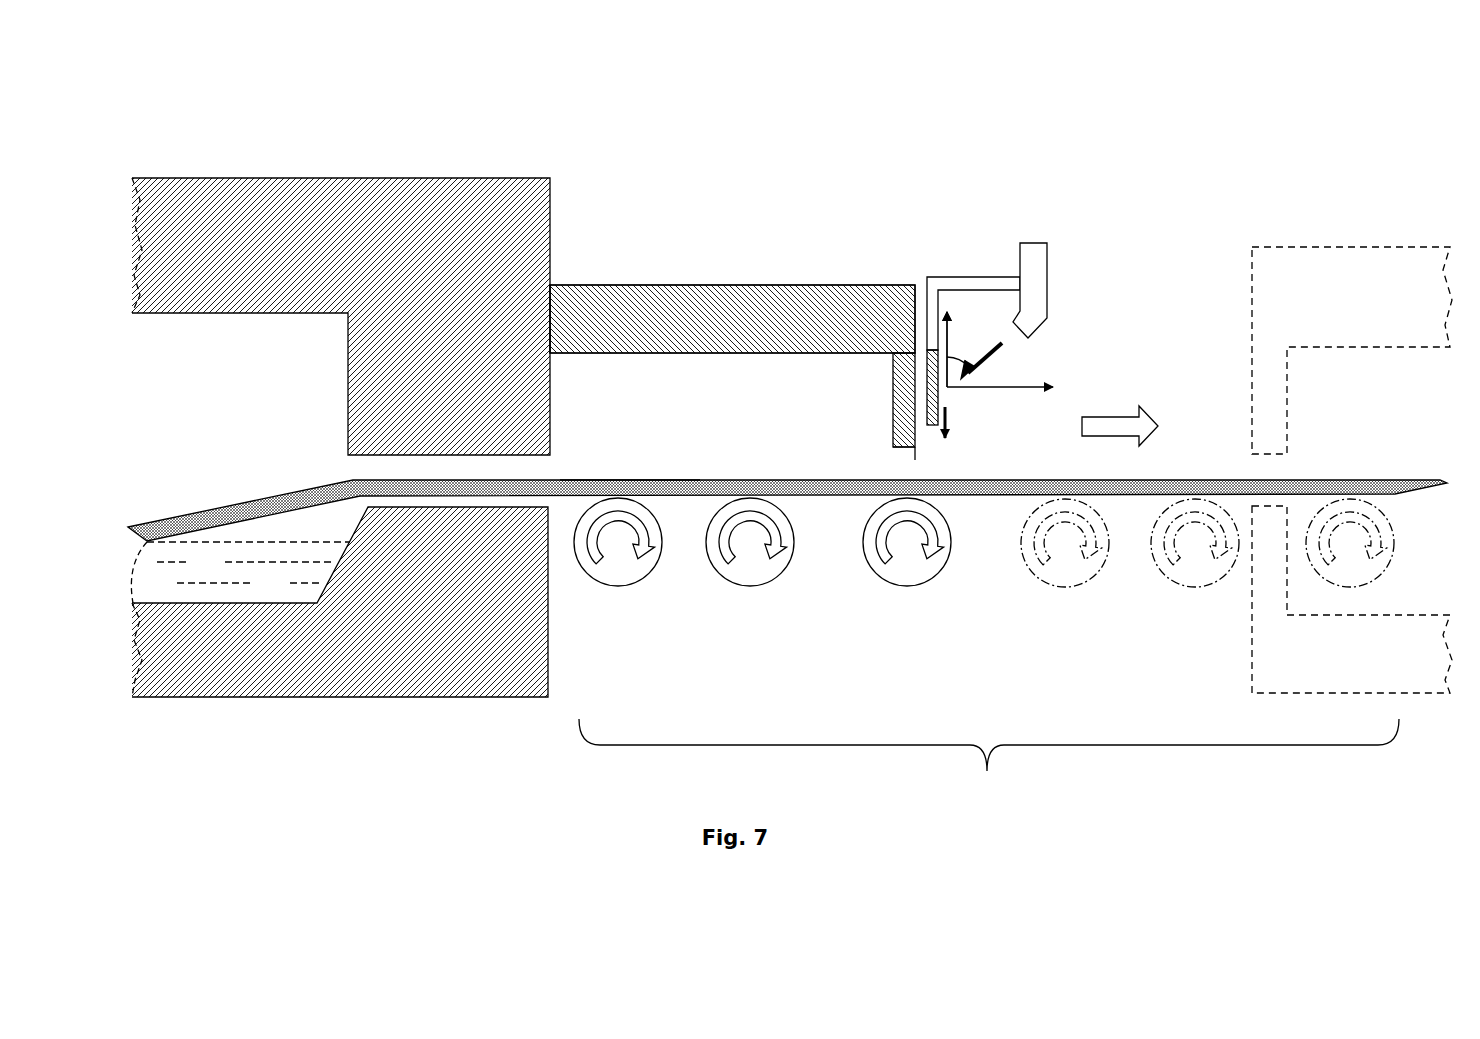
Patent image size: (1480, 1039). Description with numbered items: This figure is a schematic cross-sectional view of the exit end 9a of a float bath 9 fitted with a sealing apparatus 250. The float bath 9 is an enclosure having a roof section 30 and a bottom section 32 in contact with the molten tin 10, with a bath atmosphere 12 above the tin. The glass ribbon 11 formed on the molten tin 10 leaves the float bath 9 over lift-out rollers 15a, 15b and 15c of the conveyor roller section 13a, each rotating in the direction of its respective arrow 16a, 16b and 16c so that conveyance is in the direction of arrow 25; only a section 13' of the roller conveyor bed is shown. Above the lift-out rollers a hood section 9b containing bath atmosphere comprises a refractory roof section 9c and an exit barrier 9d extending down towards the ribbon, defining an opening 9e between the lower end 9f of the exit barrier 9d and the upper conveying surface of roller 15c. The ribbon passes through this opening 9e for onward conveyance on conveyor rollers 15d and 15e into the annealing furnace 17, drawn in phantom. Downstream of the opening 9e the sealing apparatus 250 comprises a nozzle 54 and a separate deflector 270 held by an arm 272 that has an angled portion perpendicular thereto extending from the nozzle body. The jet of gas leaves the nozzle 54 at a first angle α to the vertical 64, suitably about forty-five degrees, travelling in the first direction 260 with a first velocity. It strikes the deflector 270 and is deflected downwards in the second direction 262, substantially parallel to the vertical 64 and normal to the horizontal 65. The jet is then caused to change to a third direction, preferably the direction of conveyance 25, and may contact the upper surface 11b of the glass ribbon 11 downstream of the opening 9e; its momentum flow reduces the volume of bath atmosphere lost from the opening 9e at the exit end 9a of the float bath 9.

The float bath 9 is at (257, 130).
The exit end 9a is at (742, 110).
The hood section 9b is at (793, 282).
The refractory roof section 9c is at (665, 315).
The exit barrier 9d is at (893, 410).
The opening 9e is at (922, 462).
The lower end of the exit barrier 9f is at (905, 452).
The molten tin 10 is at (152, 590).
The glass ribbon 11 is at (1334, 490).
The upper surface of the ribbon of glass 11b is at (650, 480).
The bath atmosphere 12 is at (175, 412).
The conveyor roller section 13a is at (847, 639).
The roller conveyor bed section 13' is at (989, 762).
The lift-out conveyor roller 15a is at (645, 560).
The lift-out conveyor roller 15b is at (775, 560).
The lift-out conveyor roller 15c is at (925, 560).
The conveyor roller 15d is at (1075, 575).
The conveyor roller 15e is at (1210, 570).
The arrow 16a is at (594, 550).
The arrow 16b is at (722, 540).
The arrow 16c is at (880, 548).
The annealing furnace 17 is at (1362, 205).
The direction of conveyance 25 is at (1118, 420).
The roof section 30 is at (392, 195).
The bottom section 32 is at (395, 662).
The nozzle 54 is at (1032, 280).
The vertical 64 is at (950, 318).
The horizontal 65 is at (1020, 387).
The sealing apparatus 250 is at (1066, 210).
The first jet direction 260 is at (1013, 356).
The second jet direction 262 is at (948, 430).
The deflector 270 is at (938, 393).
The arm 272 is at (969, 292).